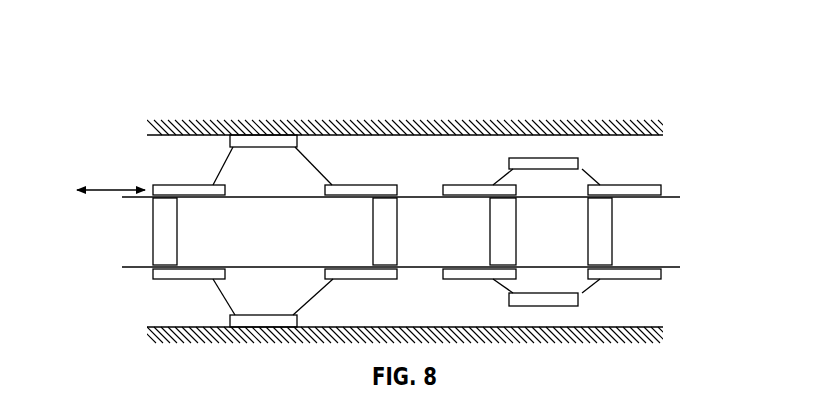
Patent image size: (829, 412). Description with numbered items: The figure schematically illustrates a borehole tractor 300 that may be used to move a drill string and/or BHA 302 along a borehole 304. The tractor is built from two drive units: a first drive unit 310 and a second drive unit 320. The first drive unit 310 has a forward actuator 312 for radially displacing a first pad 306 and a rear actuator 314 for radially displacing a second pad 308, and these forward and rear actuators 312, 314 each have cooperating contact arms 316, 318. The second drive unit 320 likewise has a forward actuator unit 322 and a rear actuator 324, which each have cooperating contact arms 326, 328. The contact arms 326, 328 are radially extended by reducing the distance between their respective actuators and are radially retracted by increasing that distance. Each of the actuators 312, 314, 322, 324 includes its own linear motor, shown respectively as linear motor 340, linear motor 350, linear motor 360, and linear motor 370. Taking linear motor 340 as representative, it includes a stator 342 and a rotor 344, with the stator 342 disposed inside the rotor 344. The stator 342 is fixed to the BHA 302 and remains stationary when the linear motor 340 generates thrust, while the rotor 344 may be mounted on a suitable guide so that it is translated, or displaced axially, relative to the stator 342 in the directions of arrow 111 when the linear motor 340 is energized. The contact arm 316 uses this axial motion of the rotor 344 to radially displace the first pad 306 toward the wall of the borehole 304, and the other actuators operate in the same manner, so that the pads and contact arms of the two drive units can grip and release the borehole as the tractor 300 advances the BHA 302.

The borehole tractor 300 is at (118, 48).
The BHA 302 is at (140, 267).
The borehole 304 is at (622, 135).
The first pad 306 is at (265, 143).
The second pad 308 is at (540, 158).
The first drive unit 310 is at (218, 120).
The forward actuator 312 is at (145, 180).
The rear actuator 314 is at (360, 183).
The contact arm 316 is at (227, 165).
The contact arm 318 is at (315, 167).
The second drive unit 320 is at (530, 154).
The forward actuator unit 322 is at (470, 183).
The rear actuator 324 is at (647, 184).
The contact arm 326 is at (508, 176).
The contact arm 328 is at (587, 172).
The linear motor 340 is at (152, 283).
The stator 342 is at (178, 222).
The rotor 344 is at (210, 198).
The linear motor 350 is at (393, 282).
The linear motor 360 is at (477, 282).
The linear motor 370 is at (645, 282).
The arrow 111 is at (97, 190).